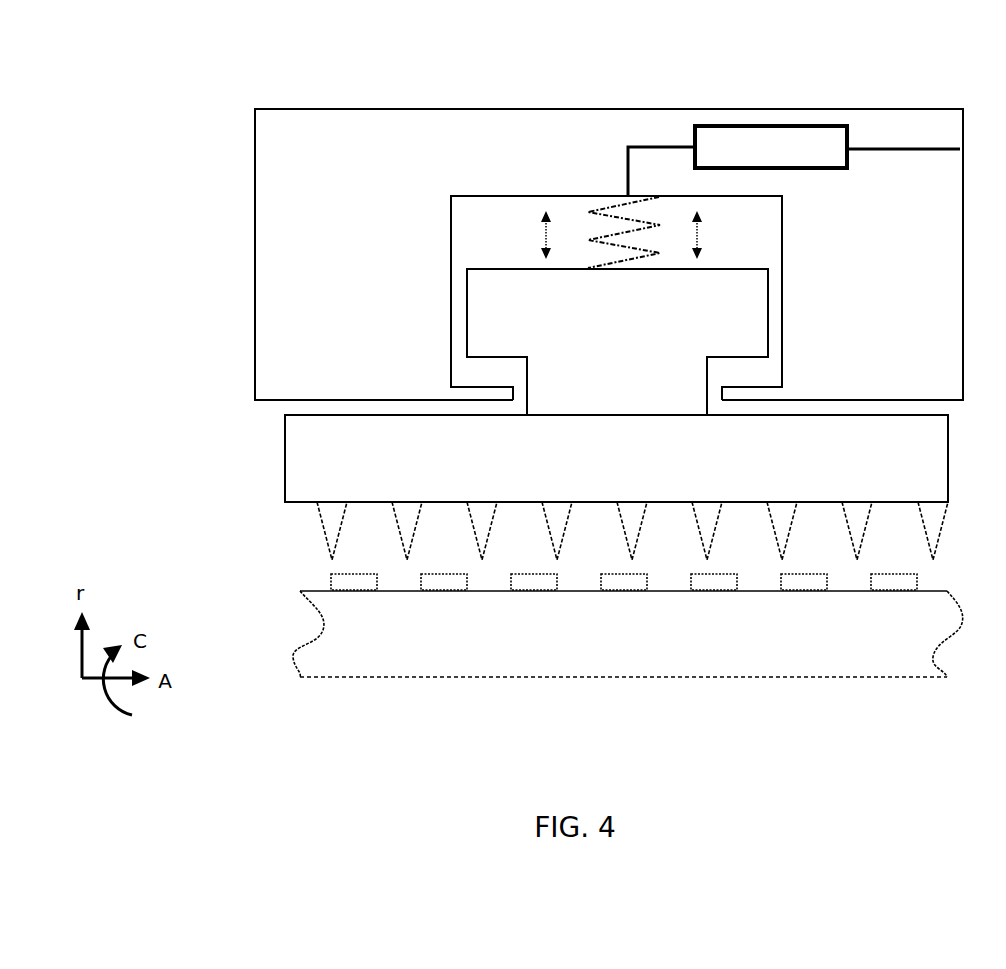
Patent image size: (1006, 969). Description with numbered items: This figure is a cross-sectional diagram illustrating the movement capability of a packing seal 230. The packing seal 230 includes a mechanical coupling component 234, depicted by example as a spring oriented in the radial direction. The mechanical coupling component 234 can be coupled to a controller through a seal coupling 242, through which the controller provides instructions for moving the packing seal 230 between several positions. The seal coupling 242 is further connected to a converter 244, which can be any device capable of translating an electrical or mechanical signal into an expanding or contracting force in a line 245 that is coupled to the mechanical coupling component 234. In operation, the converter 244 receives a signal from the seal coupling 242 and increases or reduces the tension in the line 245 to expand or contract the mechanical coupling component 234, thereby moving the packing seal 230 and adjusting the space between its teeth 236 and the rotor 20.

The rotor 20 is at (628, 625).
The packing seal 230 is at (284, 455).
The mechanical coupling component 234 is at (600, 199).
The teeth 236 is at (319, 517).
The seal coupling 242 is at (902, 149).
The converter 244 is at (785, 127).
The line 245 is at (662, 147).